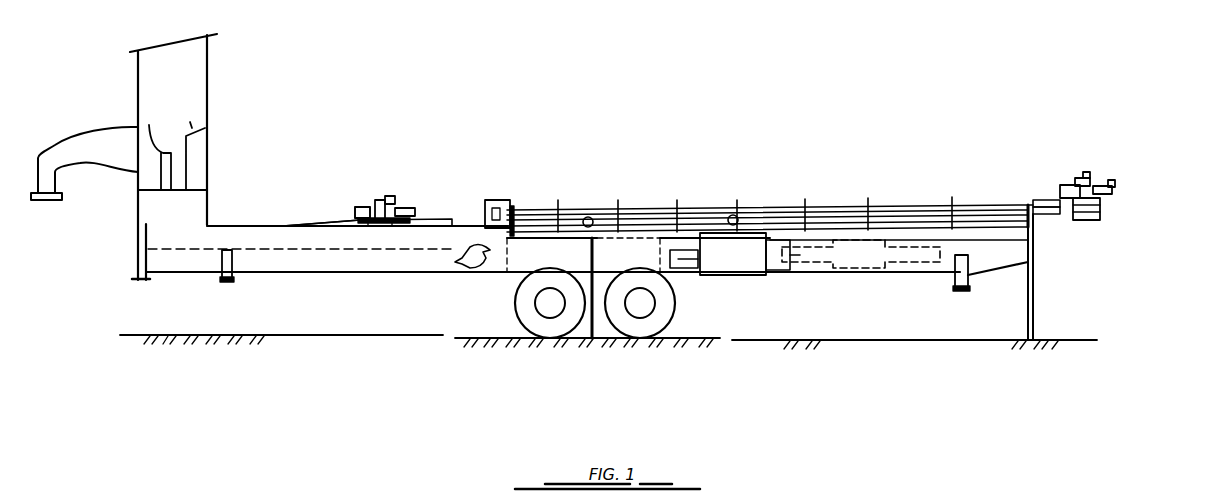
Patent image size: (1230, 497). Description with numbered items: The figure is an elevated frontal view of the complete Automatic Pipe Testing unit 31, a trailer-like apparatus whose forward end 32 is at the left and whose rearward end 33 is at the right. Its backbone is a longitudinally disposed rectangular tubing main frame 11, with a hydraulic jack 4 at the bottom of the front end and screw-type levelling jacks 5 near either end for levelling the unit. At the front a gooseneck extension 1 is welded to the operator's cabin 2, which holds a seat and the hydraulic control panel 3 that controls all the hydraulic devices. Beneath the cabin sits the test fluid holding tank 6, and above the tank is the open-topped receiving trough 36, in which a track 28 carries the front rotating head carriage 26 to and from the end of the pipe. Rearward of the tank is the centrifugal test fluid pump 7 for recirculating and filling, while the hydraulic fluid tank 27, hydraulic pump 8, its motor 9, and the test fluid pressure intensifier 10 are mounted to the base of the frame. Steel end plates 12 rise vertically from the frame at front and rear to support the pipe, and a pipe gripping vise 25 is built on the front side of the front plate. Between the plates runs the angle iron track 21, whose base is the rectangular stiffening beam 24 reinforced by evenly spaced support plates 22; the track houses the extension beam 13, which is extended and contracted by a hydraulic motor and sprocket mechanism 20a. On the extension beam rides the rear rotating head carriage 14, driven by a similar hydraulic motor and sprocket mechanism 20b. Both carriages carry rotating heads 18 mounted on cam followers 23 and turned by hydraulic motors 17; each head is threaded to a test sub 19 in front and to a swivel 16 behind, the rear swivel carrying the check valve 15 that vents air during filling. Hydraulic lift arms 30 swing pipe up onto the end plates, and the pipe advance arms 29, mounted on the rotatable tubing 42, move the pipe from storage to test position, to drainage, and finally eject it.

The gooseneck extension 1 is at (88, 128).
The operator's cabin 2 is at (210, 60).
The hydraulic control panel 3 is at (200, 150).
The hydraulic jack 4 is at (138, 280).
The screw-type levelling jack 5 is at (226, 283).
The test fluid holding tank 6 is at (192, 258).
The centrifugal test fluid pump 7 is at (456, 262).
The hydraulic pump 8 is at (683, 268).
The motor 9 is at (725, 258).
The test fluid pressure intensifier 10 is at (852, 260).
The main frame 11 is at (276, 275).
The end plate 12 is at (572, 140).
The extension beam 13 is at (770, 210).
The rear rotating head carriage 14 is at (1100, 208).
The check valve 15 is at (1107, 185).
The swivel 16 is at (362, 208).
The hydraulic motor 17 is at (380, 200).
The rotating head 18 is at (390, 200).
The test sub 19 is at (405, 208).
The hydraulic motor and sprocket mechanism 20a is at (1046, 207).
The hydraulic motor and sprocket mechanism 20b is at (1058, 200).
The angle iron track 21 is at (1025, 212).
The support plate 22 is at (558, 205).
The cam follower 23 is at (588, 217).
The stiffening beam 24 is at (1038, 222).
The pipe gripping vise 25 is at (490, 200).
The front rotating head carriage 26 is at (370, 225).
The hydraulic fluid tank 27 is at (508, 270).
The track 28 is at (315, 222).
The hydraulic pipe advance arm 29 is at (513, 212).
The hydraulic lift arm 30 is at (592, 340).
The Automatic Pipe Testing unit 31 is at (780, 157).
The forward end 32 is at (137, 213).
The rearward end 33 is at (1042, 272).
The receiving trough 36 is at (283, 227).
The tubing 42 is at (1022, 216).